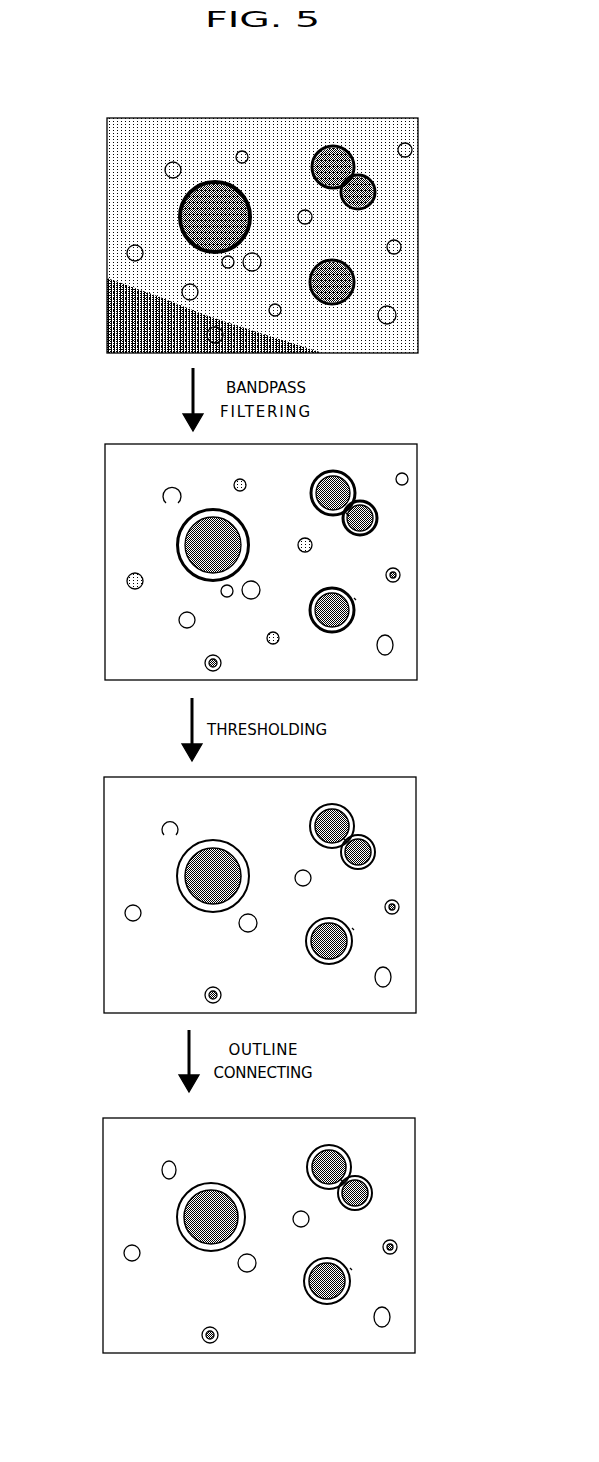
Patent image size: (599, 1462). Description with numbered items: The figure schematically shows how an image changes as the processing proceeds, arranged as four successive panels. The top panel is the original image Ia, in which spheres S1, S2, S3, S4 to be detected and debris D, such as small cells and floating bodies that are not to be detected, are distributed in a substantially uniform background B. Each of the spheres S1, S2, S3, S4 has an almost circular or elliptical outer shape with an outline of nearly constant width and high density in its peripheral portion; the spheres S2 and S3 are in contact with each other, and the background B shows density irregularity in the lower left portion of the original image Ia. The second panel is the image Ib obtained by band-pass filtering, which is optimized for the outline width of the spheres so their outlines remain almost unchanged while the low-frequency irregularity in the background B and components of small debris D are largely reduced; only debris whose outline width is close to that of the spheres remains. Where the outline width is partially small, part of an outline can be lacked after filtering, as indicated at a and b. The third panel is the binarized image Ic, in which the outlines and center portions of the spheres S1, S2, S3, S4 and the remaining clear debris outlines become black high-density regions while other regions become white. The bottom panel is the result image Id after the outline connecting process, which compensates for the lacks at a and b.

The background B is at (123, 158).
The original image Ia is at (418, 167).
The image after band-pass filtering Ib is at (417, 497).
The binarized image Ic is at (416, 830).
The result image of outline connecting process Id is at (415, 1170).
The debris D is at (173, 162).
The sphere S1 is at (178, 213).
The sphere S2 is at (328, 146).
The sphere S3 is at (376, 192).
The sphere S4 is at (338, 306).
The portion of lacking outline a is at (342, 538).
The portion of lacking outline b is at (358, 593).